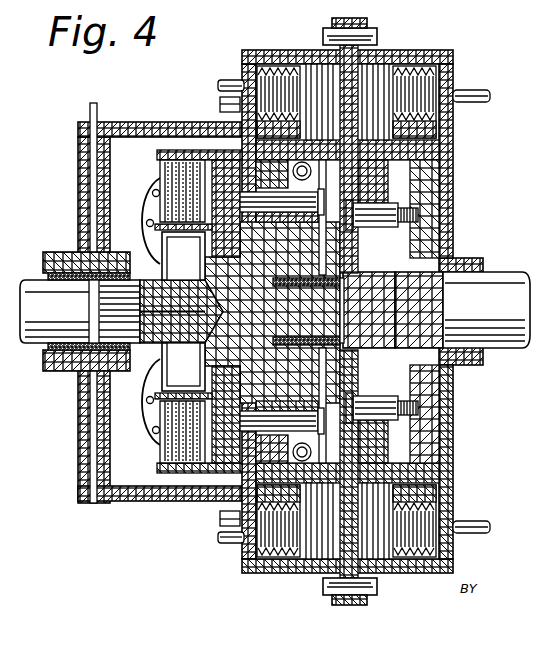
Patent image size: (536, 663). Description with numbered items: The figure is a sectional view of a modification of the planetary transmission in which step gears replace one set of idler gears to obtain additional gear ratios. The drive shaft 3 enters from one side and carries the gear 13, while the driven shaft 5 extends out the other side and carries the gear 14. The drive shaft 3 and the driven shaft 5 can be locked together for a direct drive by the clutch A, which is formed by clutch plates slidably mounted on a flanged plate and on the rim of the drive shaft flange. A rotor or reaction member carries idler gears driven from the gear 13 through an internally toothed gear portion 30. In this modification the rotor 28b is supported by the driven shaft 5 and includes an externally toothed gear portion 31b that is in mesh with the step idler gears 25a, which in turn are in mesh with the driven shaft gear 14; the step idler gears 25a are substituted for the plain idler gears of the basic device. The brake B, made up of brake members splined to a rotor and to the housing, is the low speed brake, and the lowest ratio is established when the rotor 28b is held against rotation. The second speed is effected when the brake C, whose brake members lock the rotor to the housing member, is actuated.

The drive shaft 3 is at (121, 311).
The driven shaft 5 is at (486, 310).
The gear 13 is at (258, 238).
The gear 14 is at (382, 268).
The step idler gears 25a is at (448, 192).
The rotor 28b is at (247, 143).
The internally toothed gear portion 30 is at (233, 118).
The externally toothed gear portion 31b is at (362, 262).
The clutch A is at (156, 184).
The brake B is at (455, 67).
The brake C is at (246, 68).